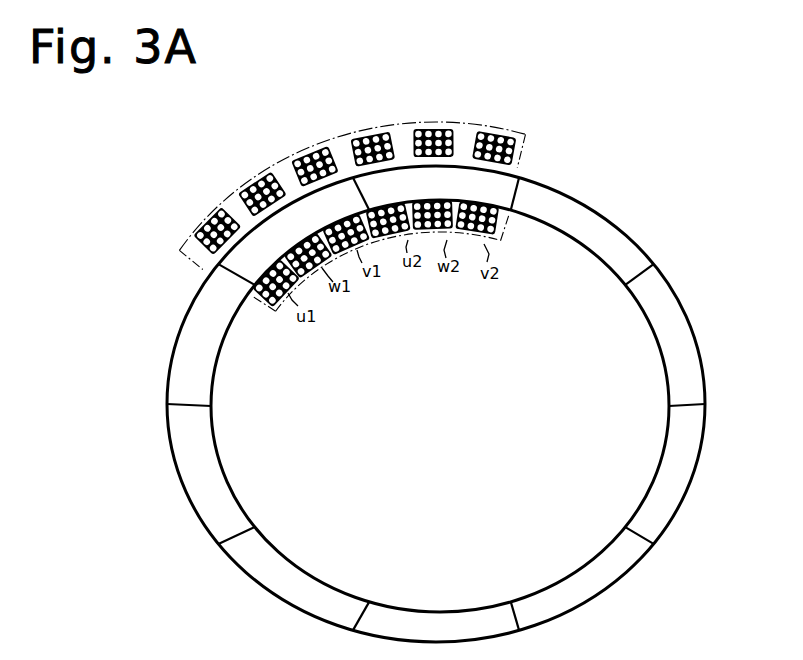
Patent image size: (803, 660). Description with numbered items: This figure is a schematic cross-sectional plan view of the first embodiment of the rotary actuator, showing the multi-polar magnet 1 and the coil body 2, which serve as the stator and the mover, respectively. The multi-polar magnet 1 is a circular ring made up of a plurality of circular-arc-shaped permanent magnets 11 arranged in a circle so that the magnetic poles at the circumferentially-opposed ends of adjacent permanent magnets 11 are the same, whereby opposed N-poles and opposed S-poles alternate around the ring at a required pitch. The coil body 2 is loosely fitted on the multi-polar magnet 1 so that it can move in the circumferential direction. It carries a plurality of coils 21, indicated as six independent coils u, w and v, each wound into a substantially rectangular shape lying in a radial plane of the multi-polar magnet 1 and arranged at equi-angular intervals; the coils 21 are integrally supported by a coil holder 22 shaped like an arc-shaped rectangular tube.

The multi-polar magnet 1 is at (439, 404).
The permanent magnet 11 is at (697, 398).
The coil body 2 is at (359, 179).
The coil 21 is at (336, 172).
The coil holder 22 is at (352, 186).